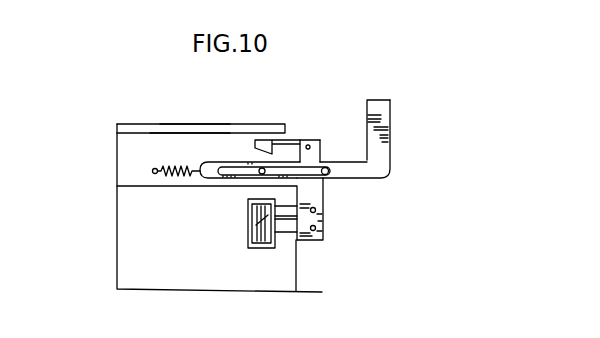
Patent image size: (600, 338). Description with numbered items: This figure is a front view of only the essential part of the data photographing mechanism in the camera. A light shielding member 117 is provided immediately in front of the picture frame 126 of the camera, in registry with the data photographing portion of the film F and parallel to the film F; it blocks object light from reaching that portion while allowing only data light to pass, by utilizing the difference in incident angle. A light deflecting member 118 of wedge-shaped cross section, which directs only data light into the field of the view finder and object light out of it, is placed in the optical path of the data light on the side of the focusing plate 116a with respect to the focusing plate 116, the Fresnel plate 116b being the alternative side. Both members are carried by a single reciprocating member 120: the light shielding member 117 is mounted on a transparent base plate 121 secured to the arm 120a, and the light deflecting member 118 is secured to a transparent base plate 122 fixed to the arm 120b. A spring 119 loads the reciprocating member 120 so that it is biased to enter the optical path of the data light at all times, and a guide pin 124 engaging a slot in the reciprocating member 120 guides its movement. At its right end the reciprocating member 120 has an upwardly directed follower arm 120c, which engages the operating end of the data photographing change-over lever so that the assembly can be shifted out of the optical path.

The film F is at (130, 258).
The focusing plate 116 is at (128, 123).
The focusing plate side 116a is at (186, 124).
The Fresnel plate 116b is at (177, 136).
The light shielding member 117 is at (257, 219).
The light deflecting member 118 is at (256, 150).
The spring 119 is at (168, 163).
The reciprocating member 120 is at (359, 174).
The arm 120a is at (320, 184).
The arm 120b is at (308, 145).
The follower arm 120c is at (381, 115).
The transparent base plate 121 is at (262, 249).
The transparent base plate 122 is at (268, 140).
The guide pin 124 is at (325, 168).
The picture frame 126 is at (293, 272).